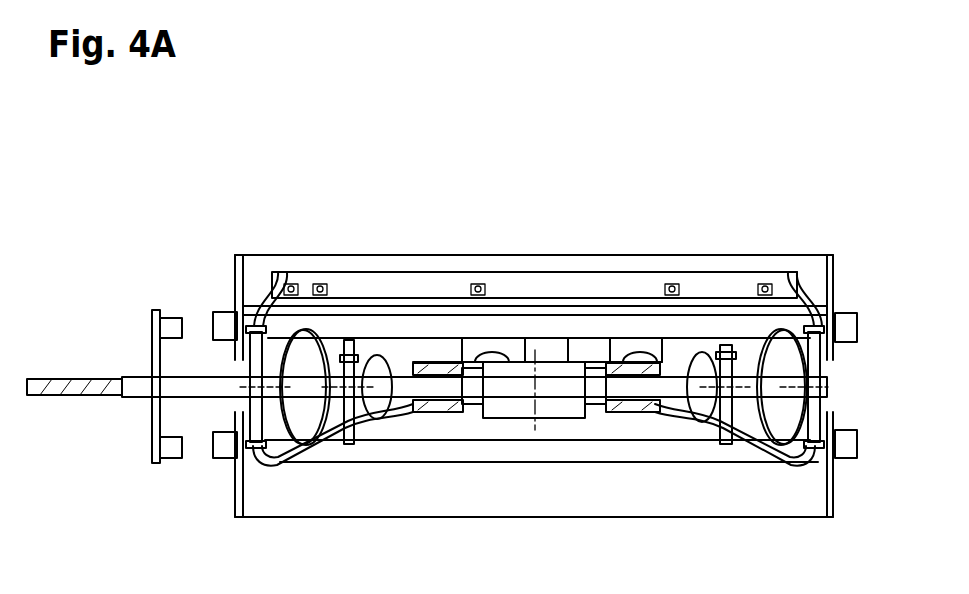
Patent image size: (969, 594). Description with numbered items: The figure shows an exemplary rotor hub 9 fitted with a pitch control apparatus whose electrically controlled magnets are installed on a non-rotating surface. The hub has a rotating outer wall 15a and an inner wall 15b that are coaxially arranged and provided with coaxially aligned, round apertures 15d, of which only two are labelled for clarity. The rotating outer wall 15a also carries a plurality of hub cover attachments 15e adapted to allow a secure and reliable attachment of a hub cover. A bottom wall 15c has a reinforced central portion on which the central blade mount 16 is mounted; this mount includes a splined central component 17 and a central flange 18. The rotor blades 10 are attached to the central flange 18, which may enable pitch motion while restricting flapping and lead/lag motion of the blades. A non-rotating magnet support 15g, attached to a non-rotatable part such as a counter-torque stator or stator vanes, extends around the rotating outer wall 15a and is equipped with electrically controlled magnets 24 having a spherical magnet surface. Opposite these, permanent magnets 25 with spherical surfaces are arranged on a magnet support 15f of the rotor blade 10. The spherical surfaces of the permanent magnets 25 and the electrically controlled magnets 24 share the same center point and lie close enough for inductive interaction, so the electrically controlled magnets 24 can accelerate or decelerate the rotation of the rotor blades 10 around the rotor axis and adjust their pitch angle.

The rotor hub 9 is at (183, 205).
The rotor blades 10 is at (64, 387).
The rotating outer wall 15a is at (250, 370).
The inner wall 15b is at (327, 423).
The bottom wall 15c is at (412, 420).
The coaxially aligned round apertures 15d is at (731, 447).
The hub cover attachments 15e is at (479, 290).
The magnet support 15f is at (153, 325).
The non-rotating magnet support 15g is at (256, 290).
The central blade mount 16 is at (532, 424).
The splined central component 17 is at (568, 366).
The central flange 18 is at (398, 368).
The electrically controlled magnets 24 is at (225, 322).
The permanent magnets 25 is at (170, 330).